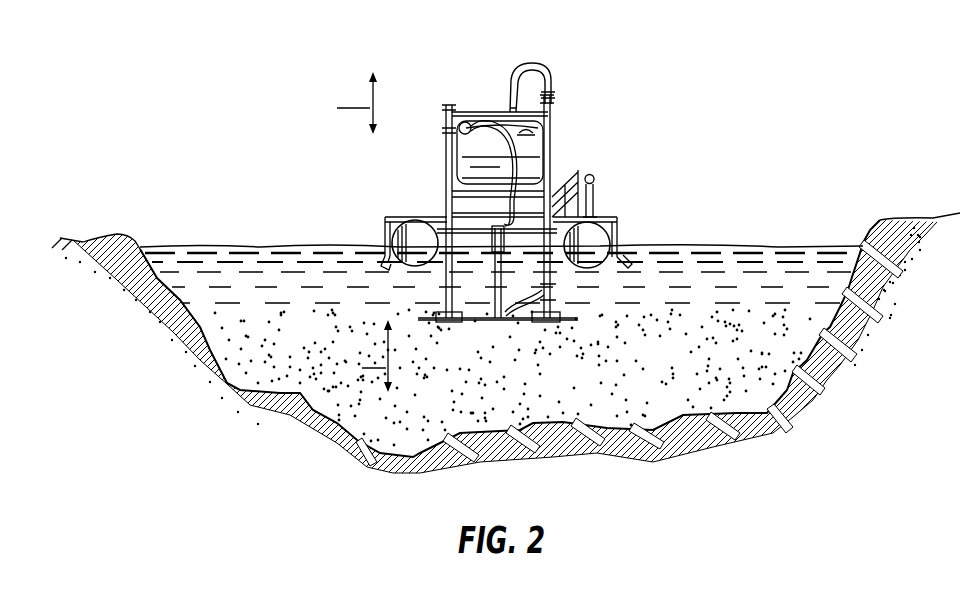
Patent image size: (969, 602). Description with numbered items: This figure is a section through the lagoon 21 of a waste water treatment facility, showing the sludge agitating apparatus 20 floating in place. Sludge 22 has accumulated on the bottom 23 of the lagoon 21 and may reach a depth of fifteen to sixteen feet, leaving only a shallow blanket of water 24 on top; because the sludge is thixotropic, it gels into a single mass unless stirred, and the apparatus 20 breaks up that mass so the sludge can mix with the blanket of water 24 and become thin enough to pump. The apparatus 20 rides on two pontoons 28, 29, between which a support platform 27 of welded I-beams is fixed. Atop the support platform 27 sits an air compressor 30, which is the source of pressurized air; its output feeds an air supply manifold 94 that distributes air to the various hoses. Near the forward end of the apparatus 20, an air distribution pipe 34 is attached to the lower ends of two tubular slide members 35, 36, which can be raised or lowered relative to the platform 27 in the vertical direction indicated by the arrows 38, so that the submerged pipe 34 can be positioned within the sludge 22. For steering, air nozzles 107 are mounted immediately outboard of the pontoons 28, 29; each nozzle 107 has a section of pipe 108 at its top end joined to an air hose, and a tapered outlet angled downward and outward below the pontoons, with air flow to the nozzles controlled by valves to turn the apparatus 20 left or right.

The sludge agitating apparatus 20 is at (565, 75).
The lagoon 21 is at (167, 210).
The sludge 22 is at (418, 420).
The bottom 23 is at (560, 420).
The blanket of water 24 is at (236, 255).
The support platform 27 is at (525, 242).
The pontoon 28 is at (405, 240).
The pontoon 29 is at (590, 242).
The air compressor 30 is at (533, 148).
The air distribution pipe 34 is at (492, 320).
The tubular slide member 35 is at (448, 172).
The tubular slide member 36 is at (552, 160).
The arrows 38 is at (412, 232).
The air supply manifold 94 is at (600, 182).
The air nozzle 107 is at (366, 279).
The section of pipe 108 is at (384, 254).